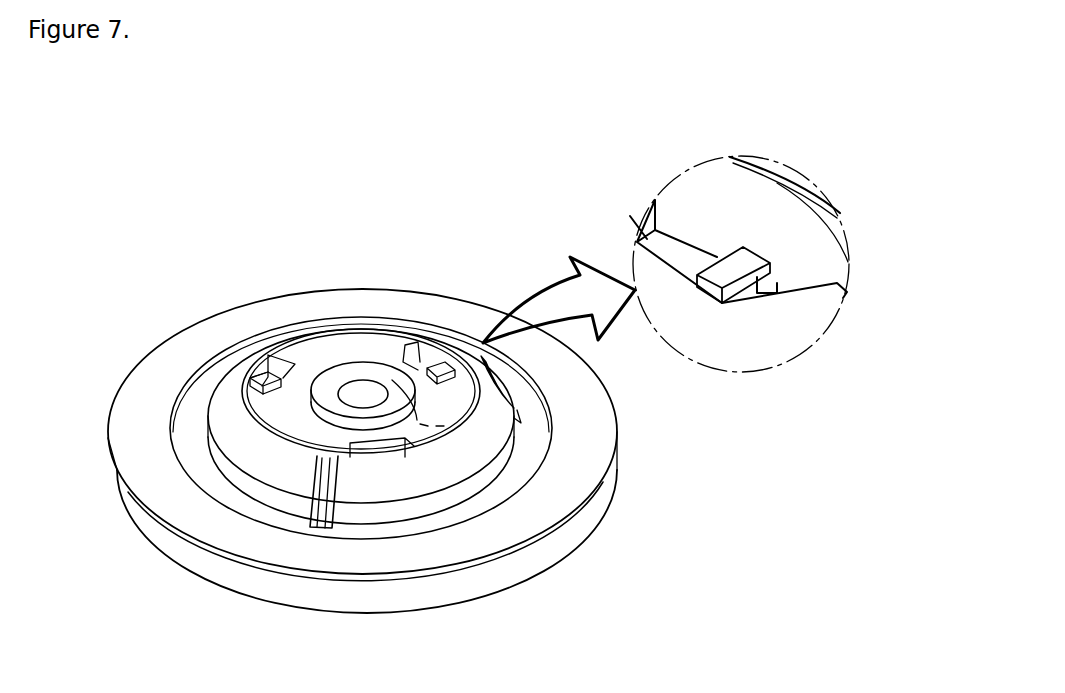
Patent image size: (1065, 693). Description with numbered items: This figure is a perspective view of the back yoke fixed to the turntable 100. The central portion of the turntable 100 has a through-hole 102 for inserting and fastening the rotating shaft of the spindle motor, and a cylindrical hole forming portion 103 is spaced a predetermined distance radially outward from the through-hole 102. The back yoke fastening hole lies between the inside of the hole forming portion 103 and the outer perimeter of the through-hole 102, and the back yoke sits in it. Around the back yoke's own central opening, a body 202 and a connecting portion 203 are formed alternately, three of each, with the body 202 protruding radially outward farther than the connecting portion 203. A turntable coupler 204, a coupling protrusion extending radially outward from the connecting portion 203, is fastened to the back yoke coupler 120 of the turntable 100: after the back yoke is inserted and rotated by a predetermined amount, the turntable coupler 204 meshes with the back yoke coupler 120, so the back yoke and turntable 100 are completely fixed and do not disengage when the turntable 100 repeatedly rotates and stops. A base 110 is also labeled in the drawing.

The turntable 100 is at (112, 320).
The through-hole 102 is at (367, 393).
The hole forming portion 103 is at (500, 447).
The base 110 is at (593, 432).
The back yoke coupler 120 is at (743, 263).
The body 202 is at (447, 403).
The connecting portion 203 is at (423, 373).
The turntable coupler 204 is at (762, 290).